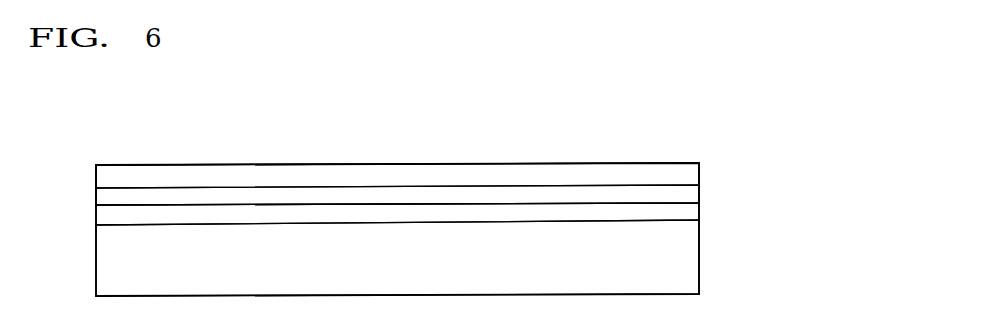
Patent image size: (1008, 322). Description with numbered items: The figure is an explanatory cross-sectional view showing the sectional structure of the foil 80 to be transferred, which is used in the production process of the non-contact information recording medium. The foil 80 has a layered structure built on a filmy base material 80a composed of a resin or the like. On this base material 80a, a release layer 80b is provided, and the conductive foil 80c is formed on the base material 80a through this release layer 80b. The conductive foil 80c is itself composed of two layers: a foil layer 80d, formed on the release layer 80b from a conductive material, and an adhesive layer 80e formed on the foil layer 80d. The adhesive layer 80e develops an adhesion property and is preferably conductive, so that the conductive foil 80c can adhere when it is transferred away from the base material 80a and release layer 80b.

The foil to be transferred 80 is at (699, 138).
The filmy base material 80a is at (699, 249).
The release layer 80b is at (699, 213).
The conductive foil 80c is at (835, 132).
The foil layer 80d is at (699, 191).
The adhesive layer 80e is at (699, 168).